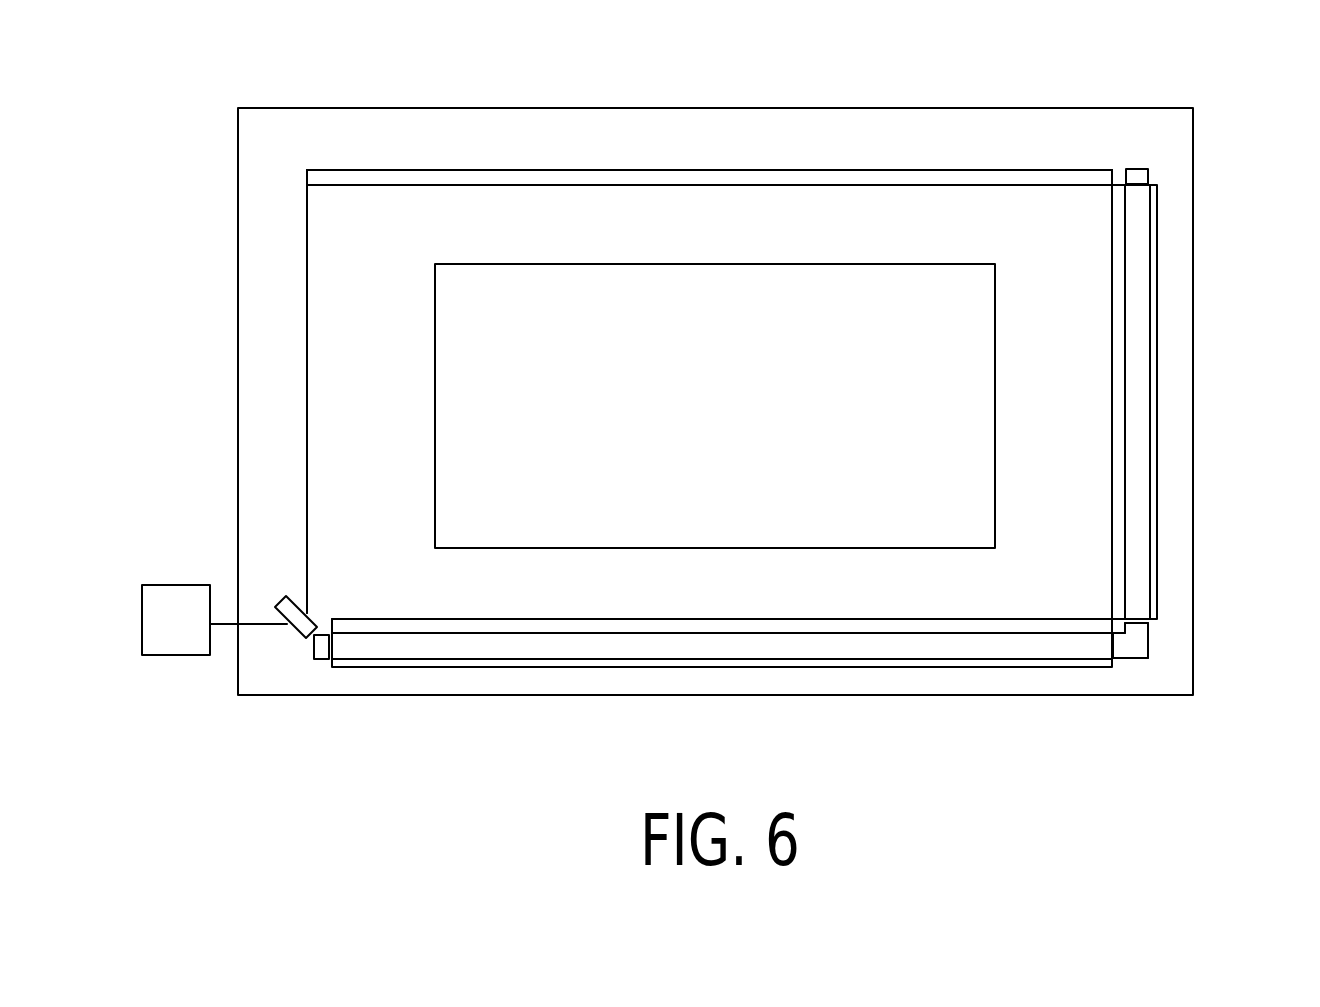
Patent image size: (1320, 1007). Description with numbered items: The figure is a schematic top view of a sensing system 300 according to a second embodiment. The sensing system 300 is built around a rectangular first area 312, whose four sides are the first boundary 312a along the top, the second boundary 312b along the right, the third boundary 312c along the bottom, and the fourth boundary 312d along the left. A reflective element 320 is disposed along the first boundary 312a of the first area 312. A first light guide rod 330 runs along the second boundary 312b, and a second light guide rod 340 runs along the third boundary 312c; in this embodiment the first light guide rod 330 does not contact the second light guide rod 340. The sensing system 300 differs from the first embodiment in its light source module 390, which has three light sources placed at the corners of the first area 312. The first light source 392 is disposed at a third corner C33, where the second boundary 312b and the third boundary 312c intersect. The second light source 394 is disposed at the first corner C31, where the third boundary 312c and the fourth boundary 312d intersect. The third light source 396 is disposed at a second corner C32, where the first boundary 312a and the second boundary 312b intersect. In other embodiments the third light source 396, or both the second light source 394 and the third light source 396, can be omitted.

The sensing system 300 is at (1288, 767).
The first area 312 is at (330, 243).
The first boundary 312a is at (350, 185).
The second boundary 312b is at (1112, 310).
The third boundary 312c is at (938, 619).
The fourth boundary 312d is at (307, 390).
The reflective element 320 is at (703, 175).
The first light guide rod 330 is at (1140, 395).
The second light guide rod 340 is at (625, 650).
The light source module 390 is at (1158, 642).
The first light source 392 is at (1135, 660).
The second light source 394 is at (320, 660).
The third light source 396 is at (1148, 178).
The first corner C31 is at (293, 590).
The second corner C32 is at (1096, 209).
The third corner C33 is at (1091, 600).